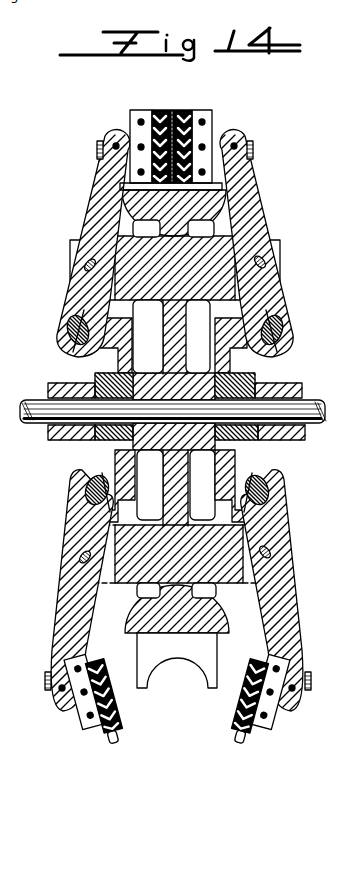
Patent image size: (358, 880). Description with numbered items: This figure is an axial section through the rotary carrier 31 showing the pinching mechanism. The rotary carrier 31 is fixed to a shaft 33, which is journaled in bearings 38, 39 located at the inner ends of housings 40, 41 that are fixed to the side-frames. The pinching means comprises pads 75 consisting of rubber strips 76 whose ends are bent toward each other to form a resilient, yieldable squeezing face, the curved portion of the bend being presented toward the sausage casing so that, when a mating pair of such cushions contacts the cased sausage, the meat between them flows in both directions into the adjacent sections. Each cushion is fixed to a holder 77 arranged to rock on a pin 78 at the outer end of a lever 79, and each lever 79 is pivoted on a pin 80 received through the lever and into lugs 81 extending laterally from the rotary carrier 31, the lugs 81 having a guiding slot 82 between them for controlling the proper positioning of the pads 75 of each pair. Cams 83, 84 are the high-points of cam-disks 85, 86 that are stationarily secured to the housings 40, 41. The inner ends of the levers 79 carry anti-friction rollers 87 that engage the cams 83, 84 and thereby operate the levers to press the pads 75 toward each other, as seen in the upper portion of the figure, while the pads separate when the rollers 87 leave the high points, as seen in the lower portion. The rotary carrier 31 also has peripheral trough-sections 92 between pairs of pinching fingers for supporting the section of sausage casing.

The rotary carrier 31 is at (165, 305).
The shaft 33 is at (316, 400).
The bearing 38 is at (95, 386).
The bearing 39 is at (270, 386).
The housing 40 is at (60, 442).
The housing 41 is at (292, 440).
The pad 75 is at (128, 112).
The rubber strip 76 is at (158, 110).
The holder 77 is at (95, 149).
The pin 78 is at (105, 137).
The lever 79 is at (85, 197).
The pin 80 is at (84, 268).
The lug 81 is at (70, 250).
The guiding slot 82 is at (133, 298).
The cam 83 is at (103, 350).
The cam 84 is at (245, 350).
The cam-disk 85 is at (118, 462).
The cam-disk 86 is at (230, 462).
The anti-friction roller 87 is at (66, 332).
The peripheral trough-section 92 is at (178, 660).